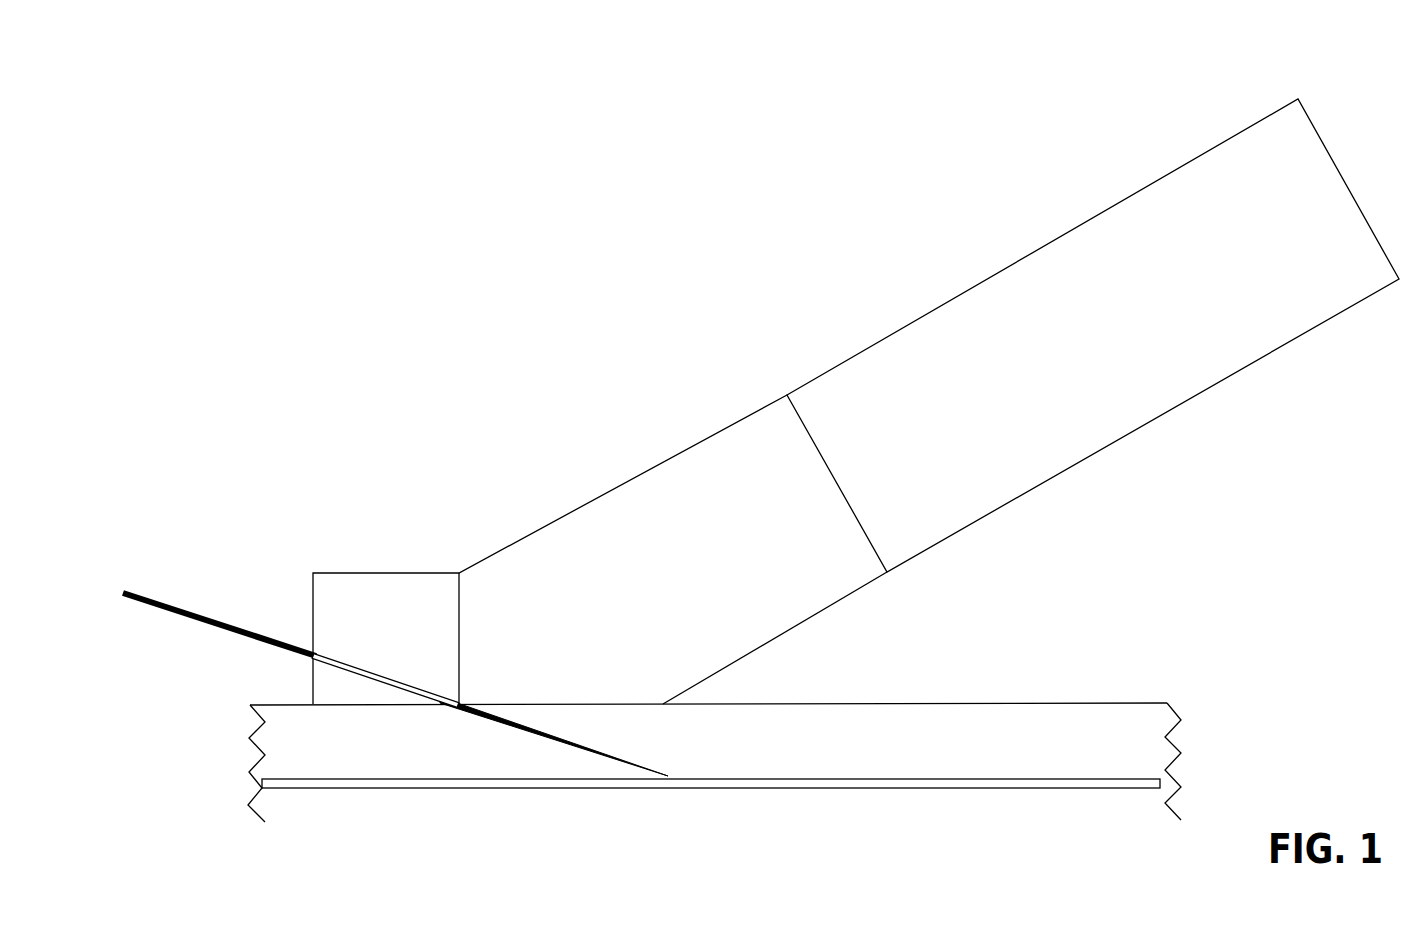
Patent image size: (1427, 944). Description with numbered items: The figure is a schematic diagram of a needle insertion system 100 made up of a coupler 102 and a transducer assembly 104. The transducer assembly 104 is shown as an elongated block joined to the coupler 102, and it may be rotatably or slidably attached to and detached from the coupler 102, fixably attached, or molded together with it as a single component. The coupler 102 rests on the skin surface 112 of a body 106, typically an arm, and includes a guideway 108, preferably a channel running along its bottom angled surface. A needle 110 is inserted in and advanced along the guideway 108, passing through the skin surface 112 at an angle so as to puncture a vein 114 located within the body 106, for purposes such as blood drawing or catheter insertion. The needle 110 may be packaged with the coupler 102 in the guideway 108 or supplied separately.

The needle insertion system 100 is at (1366, 109).
The coupler 102 is at (708, 585).
The transducer assembly 104 is at (1222, 332).
The body 106 is at (790, 732).
The guideway 108 is at (330, 670).
The needle 110 is at (275, 638).
The skin surface 112 is at (972, 702).
The vein 114 is at (968, 788).